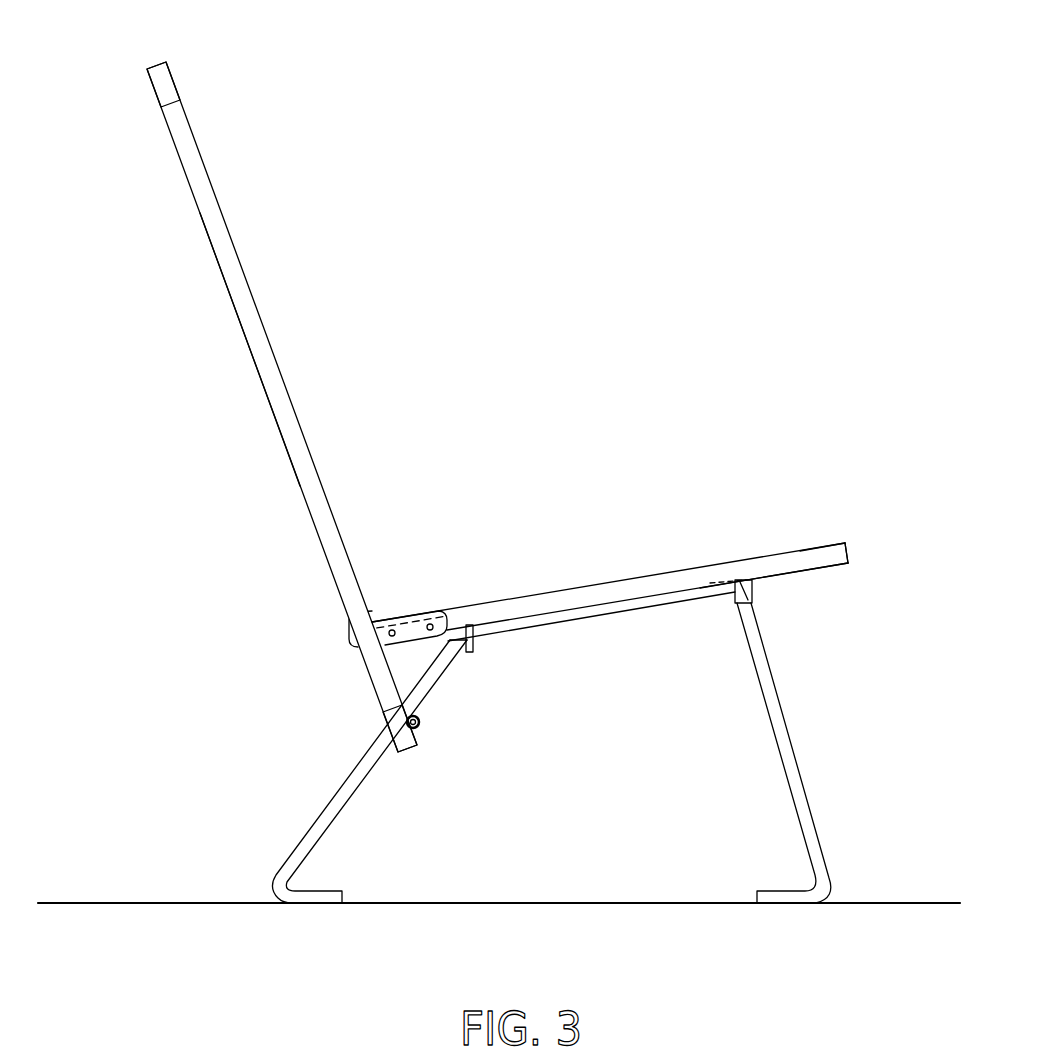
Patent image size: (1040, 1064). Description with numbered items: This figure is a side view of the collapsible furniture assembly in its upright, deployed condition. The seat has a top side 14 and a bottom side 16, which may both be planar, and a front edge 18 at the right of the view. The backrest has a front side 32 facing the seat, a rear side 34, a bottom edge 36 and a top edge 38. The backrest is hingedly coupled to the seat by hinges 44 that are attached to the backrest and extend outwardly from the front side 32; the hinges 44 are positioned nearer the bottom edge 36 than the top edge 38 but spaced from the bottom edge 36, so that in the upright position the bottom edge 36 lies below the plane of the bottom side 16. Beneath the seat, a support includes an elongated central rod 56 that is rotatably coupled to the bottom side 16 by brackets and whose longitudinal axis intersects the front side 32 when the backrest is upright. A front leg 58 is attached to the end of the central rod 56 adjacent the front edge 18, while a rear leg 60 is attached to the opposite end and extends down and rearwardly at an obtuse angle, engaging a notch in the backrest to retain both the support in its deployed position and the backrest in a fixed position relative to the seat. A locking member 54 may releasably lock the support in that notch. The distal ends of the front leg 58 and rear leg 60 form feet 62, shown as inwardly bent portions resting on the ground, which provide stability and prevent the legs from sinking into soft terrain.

The top side 14 is at (567, 590).
The bottom side 16 is at (798, 570).
The front edge 18 is at (850, 547).
The front side 32 is at (268, 343).
The rear side 34 is at (230, 298).
The bottom edge 36 is at (410, 748).
The top edge 38 is at (158, 62).
The hinges 44 is at (383, 640).
The locking member 54 is at (419, 720).
The central rod 56 is at (582, 618).
The front leg 58 is at (803, 780).
The rear leg 60 is at (337, 790).
The feet 62 is at (322, 897).